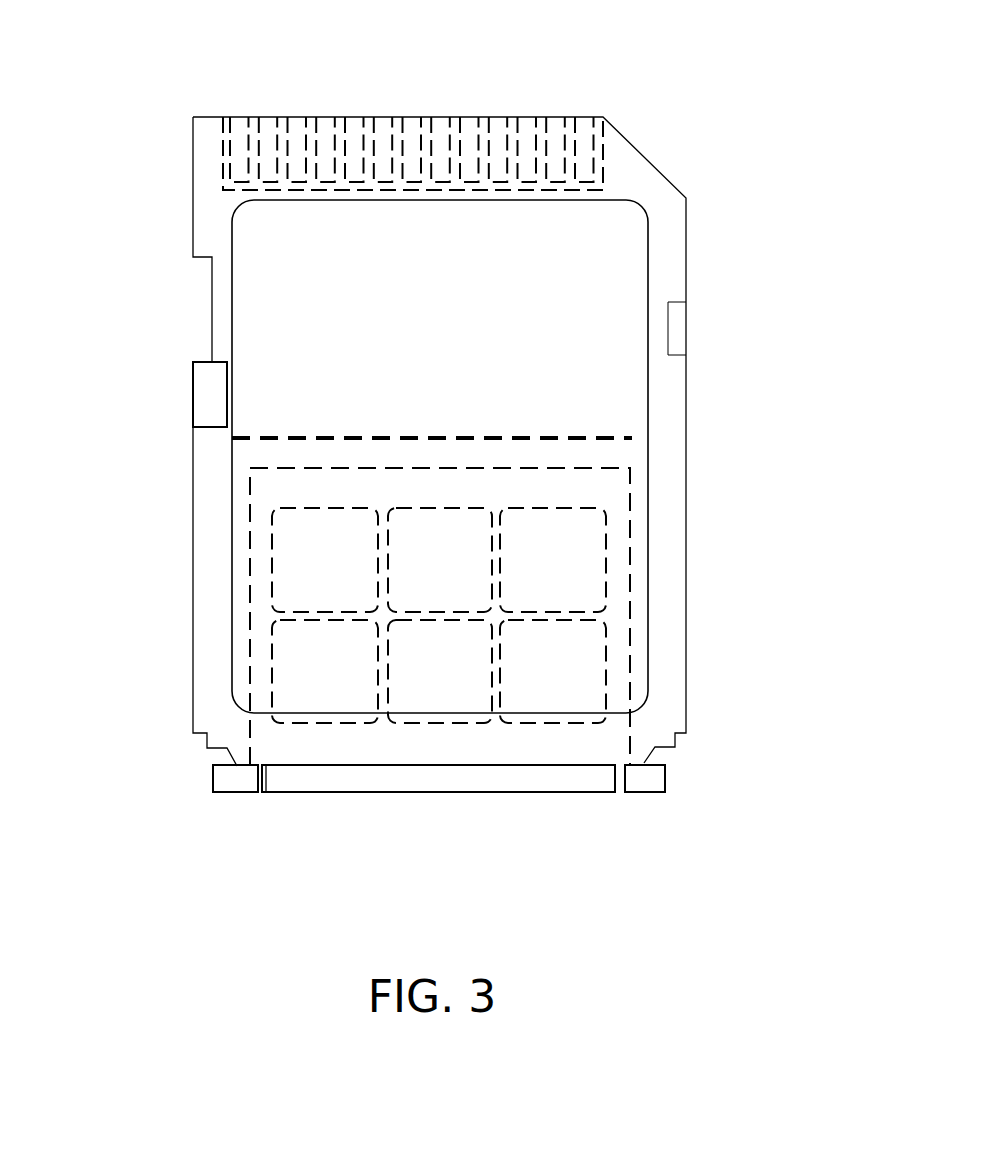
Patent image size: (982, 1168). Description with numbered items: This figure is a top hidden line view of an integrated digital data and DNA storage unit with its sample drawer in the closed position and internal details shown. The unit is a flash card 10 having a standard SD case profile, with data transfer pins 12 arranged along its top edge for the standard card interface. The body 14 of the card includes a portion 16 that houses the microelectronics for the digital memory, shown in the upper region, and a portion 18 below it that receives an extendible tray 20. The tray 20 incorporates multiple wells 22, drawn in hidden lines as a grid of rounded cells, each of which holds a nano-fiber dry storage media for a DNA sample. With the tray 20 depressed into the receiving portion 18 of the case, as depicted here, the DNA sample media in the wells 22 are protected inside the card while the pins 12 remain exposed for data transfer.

The flash card 10 is at (704, 474).
The data transfer pins 12 is at (290, 118).
The body 14 is at (240, 502).
The portion for the microelectronics 16 is at (621, 291).
The portion receiving an extendible tray 18 is at (632, 627).
The extendible tray 20 is at (215, 777).
The wells 22 is at (310, 715).